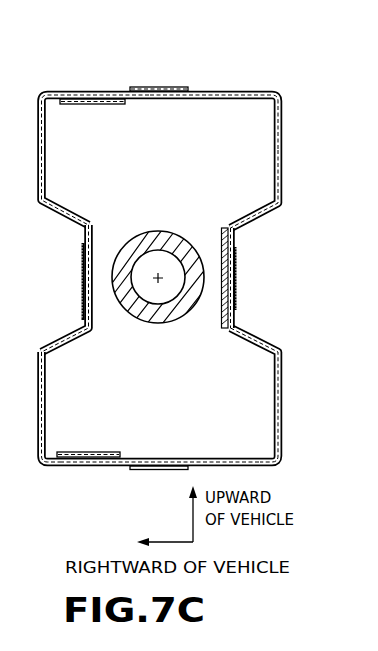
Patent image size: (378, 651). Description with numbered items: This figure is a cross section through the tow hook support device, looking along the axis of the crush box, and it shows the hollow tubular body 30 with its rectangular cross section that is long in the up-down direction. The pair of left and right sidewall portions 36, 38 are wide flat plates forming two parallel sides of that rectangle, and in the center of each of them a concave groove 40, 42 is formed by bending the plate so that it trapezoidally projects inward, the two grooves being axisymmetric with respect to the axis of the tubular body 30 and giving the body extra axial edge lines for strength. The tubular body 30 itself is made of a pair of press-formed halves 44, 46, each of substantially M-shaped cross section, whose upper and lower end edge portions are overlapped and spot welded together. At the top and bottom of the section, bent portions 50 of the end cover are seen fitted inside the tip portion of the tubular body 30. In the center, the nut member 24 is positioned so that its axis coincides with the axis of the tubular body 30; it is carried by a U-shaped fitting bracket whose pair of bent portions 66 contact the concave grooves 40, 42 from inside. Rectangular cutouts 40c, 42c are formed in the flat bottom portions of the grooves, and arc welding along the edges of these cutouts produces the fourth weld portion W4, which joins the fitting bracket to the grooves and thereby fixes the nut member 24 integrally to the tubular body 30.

The tubular body 30 is at (60, 487).
The nut member 24 is at (160, 231).
The sidewall portion 36 is at (284, 161).
The sidewall portion 38 is at (35, 388).
The concave groove 40 is at (247, 332).
The cutout 40c is at (236, 248).
The concave groove 42 is at (62, 215).
The cutout 42c is at (81, 307).
The half 44 is at (299, 84).
The half 46 is at (30, 82).
The bent portion 50 is at (47, 165).
The bent portion 66 is at (94, 238).
The fourth weld portion W4 is at (81, 264).